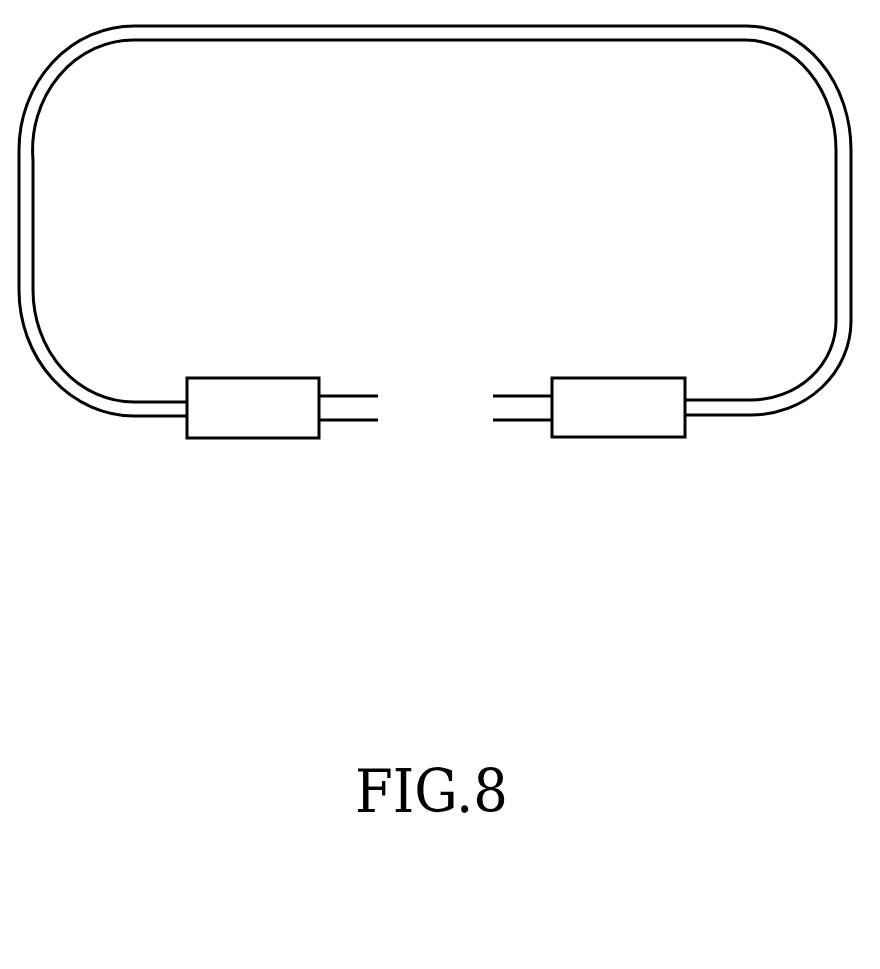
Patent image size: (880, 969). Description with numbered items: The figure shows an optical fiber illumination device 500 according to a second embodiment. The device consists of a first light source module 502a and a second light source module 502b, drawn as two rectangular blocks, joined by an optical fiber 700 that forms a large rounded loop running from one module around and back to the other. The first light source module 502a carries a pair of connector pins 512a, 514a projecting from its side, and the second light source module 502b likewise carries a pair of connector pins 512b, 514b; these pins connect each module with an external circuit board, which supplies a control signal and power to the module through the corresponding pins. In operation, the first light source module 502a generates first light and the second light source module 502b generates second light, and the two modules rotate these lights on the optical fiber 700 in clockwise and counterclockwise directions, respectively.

The optical fiber illumination device 500 is at (463, 592).
The first light source module 502a is at (246, 378).
The second light source module 502b is at (608, 377).
The connector pin 512a is at (350, 395).
The connector pin 514a is at (350, 421).
The connector pin 512b is at (520, 395).
The connector pin 514b is at (520, 421).
The optical fiber 700 is at (742, 400).